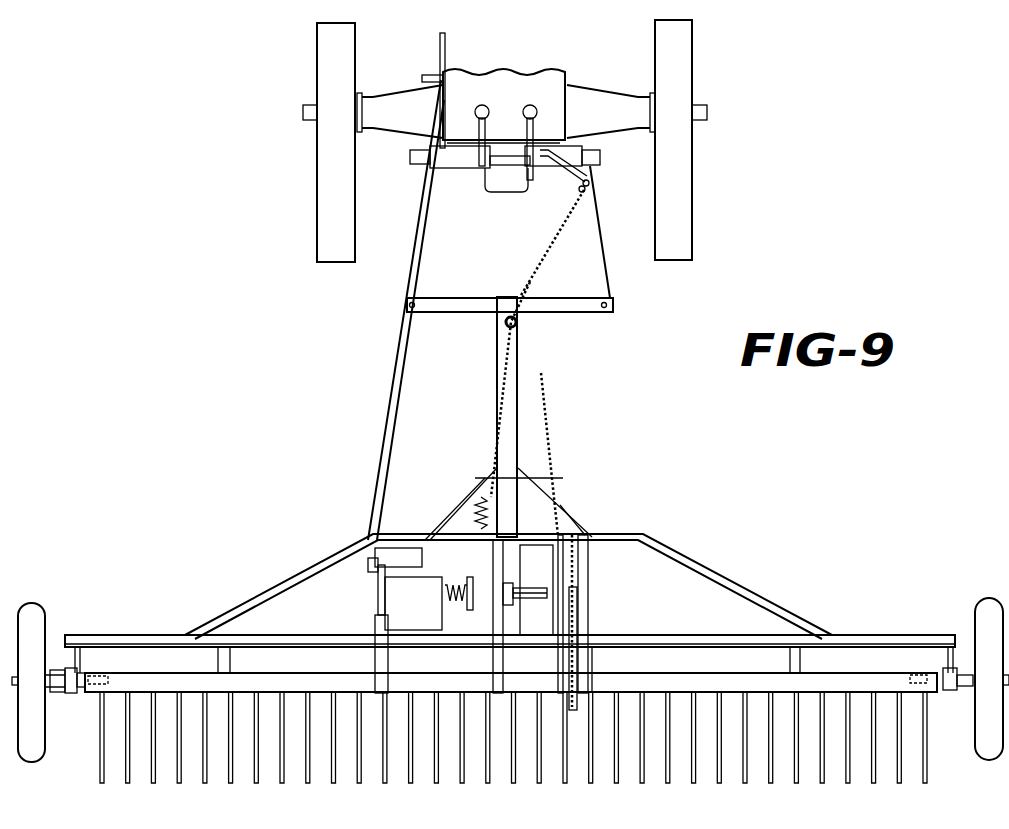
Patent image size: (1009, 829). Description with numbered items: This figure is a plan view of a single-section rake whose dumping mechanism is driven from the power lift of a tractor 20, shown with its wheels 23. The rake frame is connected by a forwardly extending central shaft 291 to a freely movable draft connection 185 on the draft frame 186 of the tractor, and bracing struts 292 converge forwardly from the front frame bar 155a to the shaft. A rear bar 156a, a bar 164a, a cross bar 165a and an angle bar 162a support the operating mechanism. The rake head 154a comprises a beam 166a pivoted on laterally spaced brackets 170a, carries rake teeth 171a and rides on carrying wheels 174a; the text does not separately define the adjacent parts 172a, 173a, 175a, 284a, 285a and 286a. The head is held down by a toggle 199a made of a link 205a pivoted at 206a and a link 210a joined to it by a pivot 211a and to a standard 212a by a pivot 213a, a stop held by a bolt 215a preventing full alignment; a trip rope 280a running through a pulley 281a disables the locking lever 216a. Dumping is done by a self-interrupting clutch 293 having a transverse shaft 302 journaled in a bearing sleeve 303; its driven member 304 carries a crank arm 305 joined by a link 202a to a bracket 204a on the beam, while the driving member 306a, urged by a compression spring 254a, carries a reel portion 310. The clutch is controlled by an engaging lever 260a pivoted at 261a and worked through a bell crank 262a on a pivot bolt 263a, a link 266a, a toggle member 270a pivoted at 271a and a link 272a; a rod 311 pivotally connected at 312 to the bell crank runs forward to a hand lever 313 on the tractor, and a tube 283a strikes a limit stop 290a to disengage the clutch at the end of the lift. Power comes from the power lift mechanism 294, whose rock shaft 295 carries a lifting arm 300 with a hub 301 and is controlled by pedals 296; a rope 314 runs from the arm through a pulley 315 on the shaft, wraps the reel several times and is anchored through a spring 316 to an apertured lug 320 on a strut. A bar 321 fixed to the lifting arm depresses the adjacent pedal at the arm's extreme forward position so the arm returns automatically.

The tractor 20 is at (550, 41).
The tractor wheels 23 is at (330, 62).
The hand lever 313 is at (446, 54).
The control pedals 296 is at (530, 105).
The power lift mechanism 294 is at (508, 148).
The rock shaft 295 is at (418, 160).
The hub 301 is at (600, 158).
The lifting arm 300 is at (594, 178).
The bar 321 is at (558, 170).
The rope 314 is at (541, 257).
The rod 311 is at (398, 377).
The draft connection 185 is at (490, 330).
The pulley 315 is at (517, 325).
The draft frame 186 is at (598, 317).
The central shaft 291 is at (500, 427).
The trip rope 280a is at (549, 431).
The apertured lug 320 is at (483, 497).
The spring 316 is at (478, 500).
The link 272a is at (465, 530).
The toggle member 270a is at (440, 540).
The pivot 271a is at (437, 540).
The link 266a is at (435, 545).
The bracing struts 292 is at (548, 493).
The cross bar 165a is at (537, 527).
The angle bar 162a is at (585, 537).
The pivot 312 is at (368, 565).
The pivot bolt 263a is at (398, 558).
The limit stop 290a is at (385, 583).
The engaging lever 260a is at (413, 601).
The bell crank 262a is at (385, 598).
The pivot 261a is at (407, 602).
The member 286a is at (390, 615).
The compression spring 254a is at (407, 617).
The reel portion 310 is at (452, 606).
The self-interrupting clutch 293 is at (537, 589).
The transverse shaft 302 is at (527, 583).
The bearing sleeve 303 is at (537, 613).
The driven clutch member 304 is at (537, 627).
The pivot 206a is at (590, 560).
The link 205a is at (590, 578).
The bolt 215a is at (670, 587).
The pivot 211a is at (590, 600).
The locking lever 216a is at (590, 617).
The toggle 199a is at (600, 623).
The front frame bar 155a is at (673, 553).
The rear bar 156a is at (720, 635).
The tube 283a is at (378, 663).
The bar 164a is at (403, 629).
The driving member 306a is at (447, 657).
The crank arm 305 is at (490, 645).
The link 202a is at (540, 662).
The link 210a is at (588, 655).
The pulley 281a is at (670, 662).
The rake head beam 166a is at (511, 671).
The brackets 170a is at (218, 663).
The bracket 172a is at (106, 676).
The member 284a is at (340, 685).
The member 285a is at (400, 690).
The bracket 204a is at (547, 683).
The standard 212a is at (620, 683).
The pivot 213a is at (575, 708).
The rake teeth 171a is at (230, 712).
The carrying wheels 174a is at (35, 615).
The wheel bracket 175a is at (78, 650).
The axle 173a is at (70, 693).
The rake head 154a is at (936, 762).